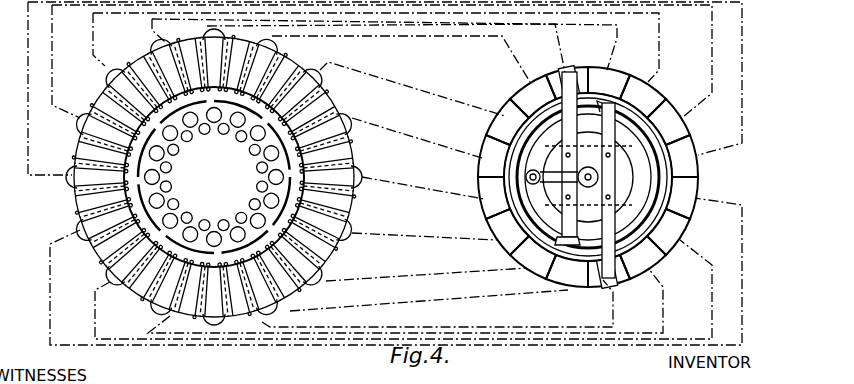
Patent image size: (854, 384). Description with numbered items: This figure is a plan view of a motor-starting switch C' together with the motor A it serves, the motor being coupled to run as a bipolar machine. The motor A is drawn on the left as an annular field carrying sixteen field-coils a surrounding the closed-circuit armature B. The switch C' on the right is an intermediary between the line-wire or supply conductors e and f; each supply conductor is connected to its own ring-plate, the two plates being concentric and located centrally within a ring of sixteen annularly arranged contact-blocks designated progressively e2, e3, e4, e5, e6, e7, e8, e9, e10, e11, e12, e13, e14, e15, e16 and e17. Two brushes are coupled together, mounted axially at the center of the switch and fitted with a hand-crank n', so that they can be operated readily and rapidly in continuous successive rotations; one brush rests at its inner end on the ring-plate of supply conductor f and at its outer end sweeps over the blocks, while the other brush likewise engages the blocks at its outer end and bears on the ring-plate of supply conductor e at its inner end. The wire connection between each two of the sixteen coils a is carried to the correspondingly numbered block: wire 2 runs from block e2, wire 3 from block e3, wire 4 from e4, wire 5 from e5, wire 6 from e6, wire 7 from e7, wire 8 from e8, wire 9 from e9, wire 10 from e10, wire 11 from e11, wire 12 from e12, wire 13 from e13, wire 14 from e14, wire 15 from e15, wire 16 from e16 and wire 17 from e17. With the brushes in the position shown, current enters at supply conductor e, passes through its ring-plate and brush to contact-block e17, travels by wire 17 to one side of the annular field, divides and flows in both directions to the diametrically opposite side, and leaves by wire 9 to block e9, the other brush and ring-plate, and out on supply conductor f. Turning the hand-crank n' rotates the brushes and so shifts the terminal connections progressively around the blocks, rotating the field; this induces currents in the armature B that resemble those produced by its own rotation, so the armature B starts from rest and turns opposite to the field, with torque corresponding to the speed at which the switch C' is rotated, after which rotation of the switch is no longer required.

The motor A is at (204, 177).
The field-coils a is at (212, 186).
The armature B is at (214, 177).
The switch C' is at (588, 177).
The supply conductor e is at (633, 183).
The contact-block e2 is at (533, 96).
The contact-block e3 is at (507, 122).
The contact-block e4 is at (494, 156).
The contact-block e5 is at (494, 198).
The contact-block e6 is at (507, 232).
The contact-block e7 is at (533, 257).
The contact-block e8 is at (567, 271).
The contact-block e9 is at (600, 282).
The contact-block e10 is at (643, 257).
The contact-block e11 is at (668, 232).
The contact-block e12 is at (682, 198).
The contact-block e13 is at (682, 156).
The contact-block e14 is at (668, 122).
The contact-block e15 is at (643, 96).
The contact-block e16 is at (609, 83).
The contact-block e17 is at (579, 73).
The supply conductor f is at (660, 170).
The hand-crank n' is at (562, 173).
The wire 2 is at (401, 59).
The wire 3 is at (412, 92).
The wire 4 is at (417, 138).
The wire 5 is at (423, 188).
The wire 6 is at (424, 231).
The wire 7 is at (426, 268).
The wire 8 is at (429, 296).
The wire 9 is at (431, 304).
The wire 10 is at (405, 300).
The wire 11 is at (415, 289).
The wire 12 is at (401, 271).
The wire 13 is at (423, 88).
The wire 14 is at (382, 61).
The wire 15 is at (376, 47).
The wire 16 is at (384, 44).
The wire 17 is at (385, 48).